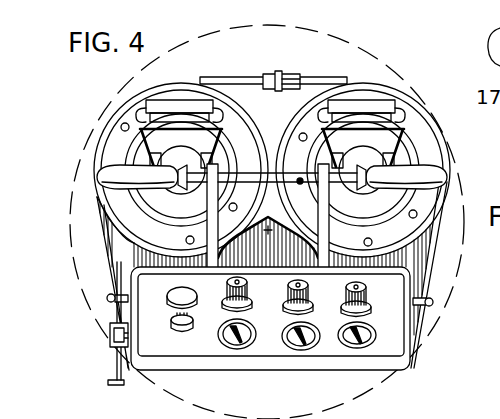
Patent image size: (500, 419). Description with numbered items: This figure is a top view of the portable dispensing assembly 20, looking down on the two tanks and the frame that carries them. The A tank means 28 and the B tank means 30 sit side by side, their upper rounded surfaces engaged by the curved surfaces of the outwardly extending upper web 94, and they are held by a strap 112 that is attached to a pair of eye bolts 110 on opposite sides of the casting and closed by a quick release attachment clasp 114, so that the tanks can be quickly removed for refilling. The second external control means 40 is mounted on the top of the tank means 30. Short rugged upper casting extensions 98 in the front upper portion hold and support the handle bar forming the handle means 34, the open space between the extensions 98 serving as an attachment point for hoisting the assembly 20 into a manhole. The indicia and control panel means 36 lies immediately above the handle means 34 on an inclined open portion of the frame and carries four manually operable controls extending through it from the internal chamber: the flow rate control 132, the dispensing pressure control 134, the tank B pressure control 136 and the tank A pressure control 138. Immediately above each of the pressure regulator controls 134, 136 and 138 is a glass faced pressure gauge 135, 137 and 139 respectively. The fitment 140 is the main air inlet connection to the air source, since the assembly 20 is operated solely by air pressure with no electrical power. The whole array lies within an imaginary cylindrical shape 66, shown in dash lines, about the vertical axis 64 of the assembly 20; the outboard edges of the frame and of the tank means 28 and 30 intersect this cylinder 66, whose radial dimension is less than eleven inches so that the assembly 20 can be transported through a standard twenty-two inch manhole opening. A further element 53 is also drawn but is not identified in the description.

The assembly 20 is at (437, 338).
The A tank means 28 is at (427, 140).
The B tank means 30 is at (120, 237).
The handle means 34 is at (431, 176).
The indicia and control panel means 36 is at (386, 335).
The second external control means 40 is at (108, 190).
The support leg 53 is at (108, 374).
The vertical axis 64 is at (267, 233).
The imaginary cylindrical shape 66 is at (385, 63).
The upper web 94 is at (243, 236).
The upper casting extensions 98 is at (210, 242).
The eye bolts 110 is at (108, 299).
The strap 112 is at (222, 77).
The quick release attachment clasp 114 is at (264, 73).
The flow rate control 132 is at (181, 335).
The dispensing pressure control 134 is at (226, 315).
The pressure gauge 135 is at (237, 349).
The tank B pressure control 136 is at (286, 315).
The pressure gauge 137 is at (298, 350).
The tank A pressure control 138 is at (345, 316).
The pressure gauge 139 is at (360, 348).
The fitment 140 is at (116, 336).